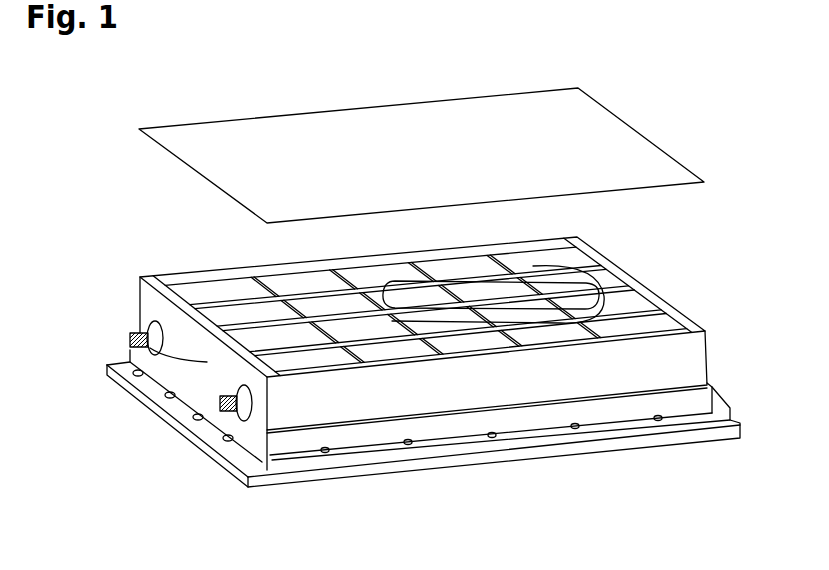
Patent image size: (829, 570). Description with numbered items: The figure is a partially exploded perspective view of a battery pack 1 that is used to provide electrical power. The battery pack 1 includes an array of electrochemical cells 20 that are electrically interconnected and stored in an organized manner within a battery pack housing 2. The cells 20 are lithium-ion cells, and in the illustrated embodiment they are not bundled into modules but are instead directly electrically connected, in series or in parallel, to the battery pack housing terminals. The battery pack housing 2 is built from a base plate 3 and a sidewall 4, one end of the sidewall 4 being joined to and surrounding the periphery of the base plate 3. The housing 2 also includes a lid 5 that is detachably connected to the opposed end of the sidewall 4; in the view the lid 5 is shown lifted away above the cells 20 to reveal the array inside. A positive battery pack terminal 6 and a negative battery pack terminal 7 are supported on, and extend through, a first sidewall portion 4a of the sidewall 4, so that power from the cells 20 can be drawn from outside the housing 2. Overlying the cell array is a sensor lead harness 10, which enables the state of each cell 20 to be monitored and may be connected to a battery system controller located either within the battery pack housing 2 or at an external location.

The battery pack 1 is at (662, 78).
The battery pack housing 2 is at (717, 239).
The base plate 3 is at (722, 403).
The sidewall 4 is at (690, 350).
The first sidewall portion 4a is at (127, 387).
The lid 5 is at (662, 158).
The positive battery pack terminal 6 is at (127, 340).
The negative battery pack terminal 7 is at (217, 408).
The sensor lead harness 10 is at (612, 256).
The electrochemical cells 20 is at (215, 318).